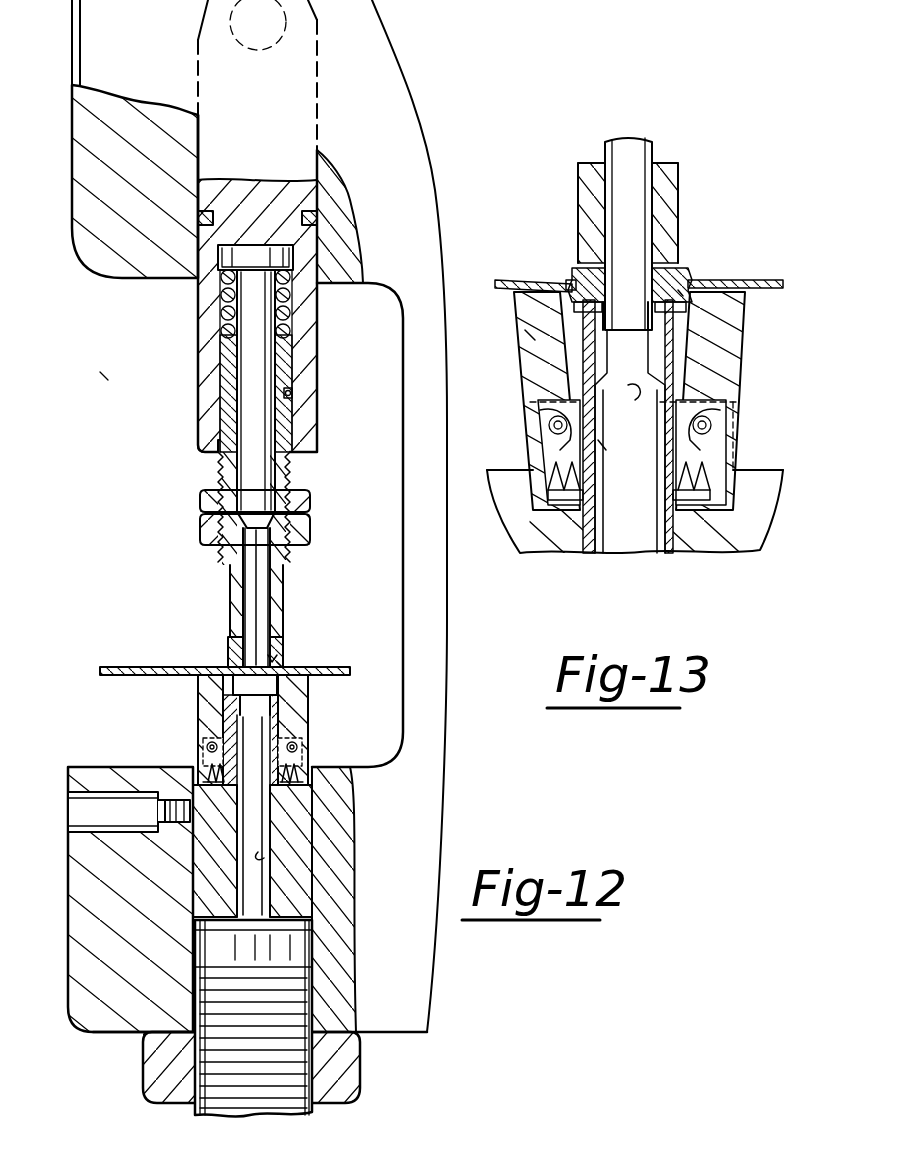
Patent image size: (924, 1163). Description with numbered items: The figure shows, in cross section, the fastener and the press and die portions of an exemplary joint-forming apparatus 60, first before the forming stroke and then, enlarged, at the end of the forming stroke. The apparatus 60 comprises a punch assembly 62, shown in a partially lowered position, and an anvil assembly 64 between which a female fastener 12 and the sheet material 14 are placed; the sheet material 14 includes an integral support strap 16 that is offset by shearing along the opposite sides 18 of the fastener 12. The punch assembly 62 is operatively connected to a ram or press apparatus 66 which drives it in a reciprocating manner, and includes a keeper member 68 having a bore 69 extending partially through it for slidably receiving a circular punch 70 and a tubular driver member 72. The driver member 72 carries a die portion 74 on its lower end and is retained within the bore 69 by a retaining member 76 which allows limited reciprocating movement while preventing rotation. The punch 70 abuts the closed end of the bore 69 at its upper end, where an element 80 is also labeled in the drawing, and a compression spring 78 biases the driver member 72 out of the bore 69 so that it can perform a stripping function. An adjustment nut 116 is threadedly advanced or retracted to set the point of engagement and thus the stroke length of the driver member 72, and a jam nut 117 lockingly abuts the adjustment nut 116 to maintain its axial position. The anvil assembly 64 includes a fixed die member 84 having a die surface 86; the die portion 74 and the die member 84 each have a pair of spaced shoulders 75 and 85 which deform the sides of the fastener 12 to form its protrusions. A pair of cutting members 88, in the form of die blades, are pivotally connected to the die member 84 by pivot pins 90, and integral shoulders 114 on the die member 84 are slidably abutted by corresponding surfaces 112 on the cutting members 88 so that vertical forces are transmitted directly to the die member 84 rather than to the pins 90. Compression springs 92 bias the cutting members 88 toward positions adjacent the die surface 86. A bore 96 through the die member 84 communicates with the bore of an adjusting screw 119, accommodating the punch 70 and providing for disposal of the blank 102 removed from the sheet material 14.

In FIG. 12, the female fastener 12 is at (274, 650).
In FIG. 13, the female fastener 12 is at (682, 292).
In FIG. 12, the sheet material 14 is at (110, 668).
In FIG. 13, the sheet material 14 is at (768, 282).
In FIG. 13, the support strap 16 is at (530, 332).
In FIG. 12, the opposite sides of fastener 18 is at (284, 660).
In FIG. 12, the joint-forming apparatus 60 is at (106, 376).
In FIG. 12, the punch assembly 62 is at (196, 400).
In FIG. 13, the punch assembly 62 is at (684, 170).
In FIG. 12, the anvil assembly 64 is at (190, 735).
In FIG. 13, the anvil assembly 64 is at (722, 450).
In FIG. 12, the ram or press apparatus 66 is at (122, 238).
In FIG. 12, the keeper member 68 is at (205, 445).
In FIG. 12, the bore 69 is at (228, 362).
In FIG. 12, the circular punch 70 is at (258, 436).
In FIG. 13, the circular punch 70 is at (650, 230).
In FIG. 12, the tubular driver member 72 is at (232, 573).
In FIG. 13, the tubular driver member 72 is at (670, 200).
In FIG. 12, the die portion 74 is at (226, 648).
In FIG. 13, the die portion 74 is at (578, 268).
In FIG. 12, the spaced shoulders 75 is at (245, 650).
In FIG. 13, the spaced shoulders 75 is at (568, 285).
In FIG. 12, the retaining member 76 is at (290, 393).
In FIG. 12, the compression spring 78 is at (230, 290).
In FIG. 12, the cap 80 is at (268, 262).
In FIG. 12, the fixed die member 84 is at (195, 868).
In FIG. 13, the fixed die member 84 is at (680, 360).
In FIG. 12, the spaced shoulders 85 is at (255, 816).
In FIG. 13, the spaced shoulders 85 is at (625, 299).
In FIG. 12, the die surface 86 is at (280, 678).
In FIG. 13, the die surface 86 is at (578, 310).
In FIG. 12, the cutting members 88 is at (205, 690).
In FIG. 13, the cutting members 88 is at (738, 334).
In FIG. 12, the pivot pins 90 is at (212, 745).
In FIG. 13, the pivot pins 90 is at (555, 425).
In FIG. 12, the compression springs 92 is at (212, 770).
In FIG. 13, the compression springs 92 is at (550, 485).
In FIG. 12, the bore 96 is at (264, 856).
In FIG. 13, the bore 96 is at (620, 480).
In FIG. 13, the blank 102 is at (635, 388).
In FIG. 13, the surfaces 112 is at (602, 446).
In FIG. 13, the integral shoulders 114 is at (575, 500).
In FIG. 12, the adjustment nut 116 is at (200, 500).
In FIG. 12, the jam nut 117 is at (200, 522).
In FIG. 12, the adjusting screw 119 is at (288, 1003).